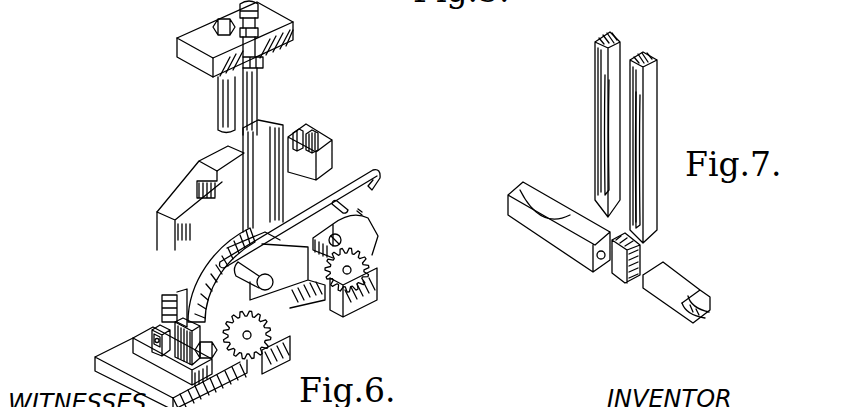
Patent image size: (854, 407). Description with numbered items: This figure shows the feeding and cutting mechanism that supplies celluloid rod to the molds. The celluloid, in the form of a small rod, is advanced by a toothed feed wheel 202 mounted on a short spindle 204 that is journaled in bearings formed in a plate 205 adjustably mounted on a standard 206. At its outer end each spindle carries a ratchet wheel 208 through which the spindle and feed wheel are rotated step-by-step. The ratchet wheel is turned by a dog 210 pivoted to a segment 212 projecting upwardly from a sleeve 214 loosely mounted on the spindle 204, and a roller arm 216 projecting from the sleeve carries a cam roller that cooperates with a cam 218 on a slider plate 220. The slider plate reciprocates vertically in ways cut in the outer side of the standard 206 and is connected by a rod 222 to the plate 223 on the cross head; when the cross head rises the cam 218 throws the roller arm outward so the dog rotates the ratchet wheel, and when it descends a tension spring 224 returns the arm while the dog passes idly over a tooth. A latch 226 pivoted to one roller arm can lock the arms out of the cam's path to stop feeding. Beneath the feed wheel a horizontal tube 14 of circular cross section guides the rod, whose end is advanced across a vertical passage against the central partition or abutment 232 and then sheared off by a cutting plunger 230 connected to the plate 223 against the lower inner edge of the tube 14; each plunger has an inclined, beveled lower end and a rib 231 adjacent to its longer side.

In FIG. 7, the horizontal guideway or tube 14 is at (662, 295).
In FIG. 6, the toothed feed wheel 202 is at (160, 310).
In FIG. 6, the spindle 204 is at (352, 270).
In FIG. 6, the plate 205 is at (193, 252).
In FIG. 6, the standard 206 is at (173, 205).
In FIG. 6, the ratchet wheel 208 is at (350, 283).
In FIG. 6, the dog 210 is at (267, 305).
In FIG. 6, the segment 212 is at (170, 297).
In FIG. 6, the sleeve 214 is at (150, 331).
In FIG. 6, the roller arm 216 is at (227, 248).
In FIG. 6, the cam 218 is at (273, 272).
In FIG. 6, the slider plate 220 is at (252, 138).
In FIG. 6, the rod 222 is at (252, 87).
In FIG. 6, the plate 223 is at (270, 15).
In FIG. 6, the tension spring 224 is at (357, 206).
In FIG. 6, the latch 226 is at (352, 195).
In FIG. 6, the cutting plunger 230 is at (226, 132).
In FIG. 7, the cutting plunger 230 is at (650, 80).
In FIG. 7, the rib 231 is at (618, 140).
In FIG. 7, the central partition or abutment 232 is at (645, 251).